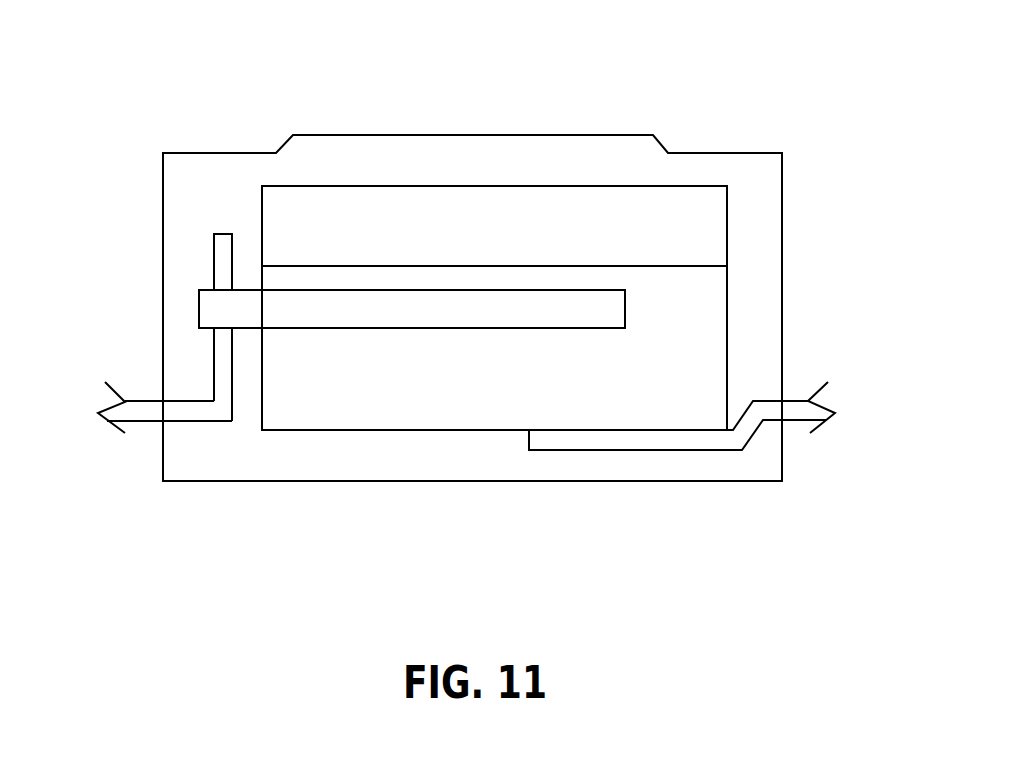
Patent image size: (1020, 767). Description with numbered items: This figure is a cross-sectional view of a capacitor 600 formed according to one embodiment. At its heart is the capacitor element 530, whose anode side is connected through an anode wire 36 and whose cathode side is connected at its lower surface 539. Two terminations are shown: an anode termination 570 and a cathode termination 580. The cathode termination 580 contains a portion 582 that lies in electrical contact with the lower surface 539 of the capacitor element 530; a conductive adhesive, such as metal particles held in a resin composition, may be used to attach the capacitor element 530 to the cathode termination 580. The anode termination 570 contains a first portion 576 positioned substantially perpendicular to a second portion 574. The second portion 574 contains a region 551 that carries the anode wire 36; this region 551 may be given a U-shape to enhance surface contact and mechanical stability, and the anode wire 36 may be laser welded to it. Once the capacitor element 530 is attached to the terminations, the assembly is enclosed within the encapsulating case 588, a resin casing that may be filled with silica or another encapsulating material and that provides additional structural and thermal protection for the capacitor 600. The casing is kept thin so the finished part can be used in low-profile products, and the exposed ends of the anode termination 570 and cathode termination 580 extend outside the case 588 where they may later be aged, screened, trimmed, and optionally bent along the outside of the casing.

The capacitor 600 is at (363, 92).
The encapsulating case 588 is at (768, 180).
The capacitor element 530 is at (663, 218).
The lower surface 539 is at (400, 431).
The anode wire 36 is at (482, 306).
The region 551 is at (202, 268).
The second portion 574 is at (213, 350).
The first portion 576 is at (193, 421).
The anode termination 570 is at (112, 404).
The portion 582 is at (672, 442).
The cathode termination 580 is at (797, 400).